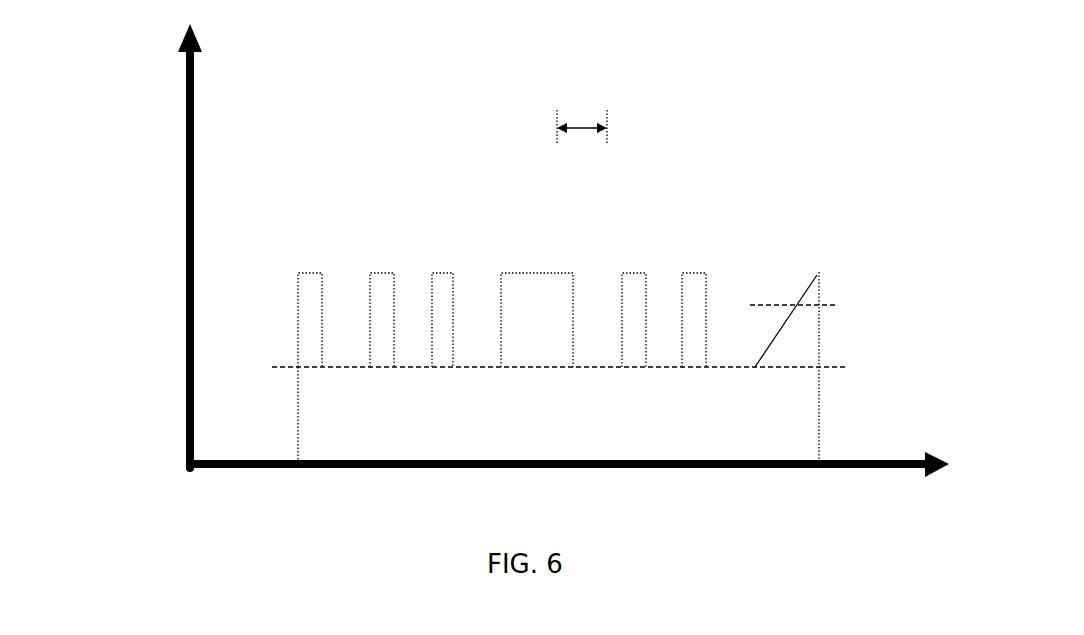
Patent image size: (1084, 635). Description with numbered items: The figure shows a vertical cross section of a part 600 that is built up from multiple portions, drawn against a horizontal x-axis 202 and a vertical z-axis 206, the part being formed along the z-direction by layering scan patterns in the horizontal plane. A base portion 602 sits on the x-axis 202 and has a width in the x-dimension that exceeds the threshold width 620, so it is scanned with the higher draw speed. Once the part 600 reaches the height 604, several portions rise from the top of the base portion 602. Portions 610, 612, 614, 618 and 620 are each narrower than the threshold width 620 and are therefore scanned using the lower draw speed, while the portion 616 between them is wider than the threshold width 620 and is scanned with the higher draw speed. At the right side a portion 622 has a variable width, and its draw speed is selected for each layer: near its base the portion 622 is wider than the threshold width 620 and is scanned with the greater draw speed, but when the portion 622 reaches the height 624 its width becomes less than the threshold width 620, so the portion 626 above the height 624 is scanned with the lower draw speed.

The part 600 is at (366, 72).
The z-axis 206 is at (185, 140).
The x-axis 202 is at (452, 468).
The base portion 602 is at (298, 411).
The height 604 is at (283, 367).
The portion 610 is at (310, 273).
The portion 612 is at (383, 273).
The portion 614 is at (445, 273).
The portion 616 is at (546, 273).
The portion 618 is at (635, 273).
The portion / threshold width 620 is at (698, 273).
The portion 622 is at (819, 345).
The height 624 is at (840, 305).
The portion 626 is at (817, 275).